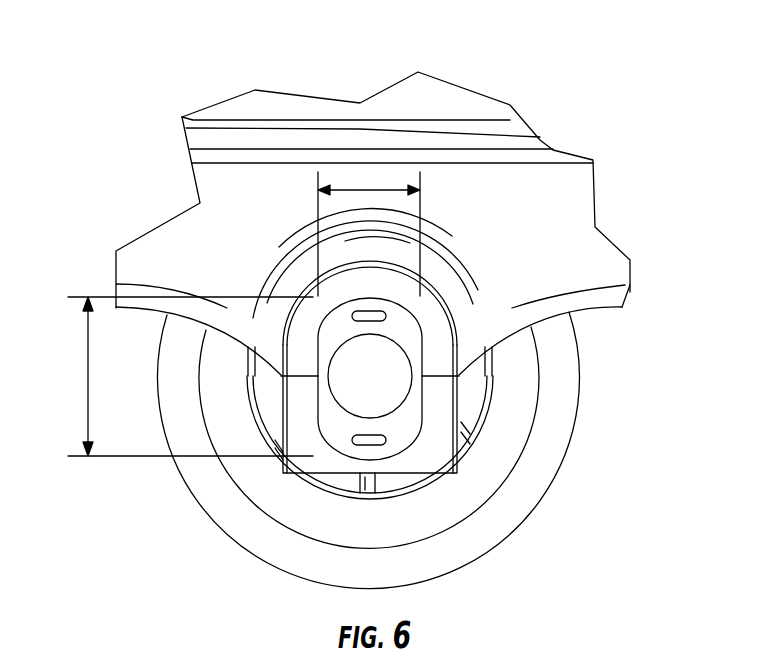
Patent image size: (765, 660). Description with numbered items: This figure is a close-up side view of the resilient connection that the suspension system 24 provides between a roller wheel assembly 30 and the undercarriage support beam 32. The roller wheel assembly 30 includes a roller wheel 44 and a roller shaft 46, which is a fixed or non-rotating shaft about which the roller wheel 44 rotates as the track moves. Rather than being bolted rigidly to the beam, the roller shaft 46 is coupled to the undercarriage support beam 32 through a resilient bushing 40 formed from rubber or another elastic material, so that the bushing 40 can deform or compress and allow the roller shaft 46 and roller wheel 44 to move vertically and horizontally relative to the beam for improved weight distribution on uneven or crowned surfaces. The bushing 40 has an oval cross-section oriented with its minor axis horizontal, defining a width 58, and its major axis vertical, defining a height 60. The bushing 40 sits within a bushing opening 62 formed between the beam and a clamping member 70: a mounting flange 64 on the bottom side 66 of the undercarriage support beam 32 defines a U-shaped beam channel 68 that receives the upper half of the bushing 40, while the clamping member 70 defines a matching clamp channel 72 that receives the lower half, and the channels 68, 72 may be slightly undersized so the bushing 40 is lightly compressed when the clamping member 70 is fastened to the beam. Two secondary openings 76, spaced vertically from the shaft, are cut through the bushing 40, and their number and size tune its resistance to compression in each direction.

The suspension system 24 is at (648, 91).
The roller wheel assembly 30 is at (489, 549).
The undercarriage support beam 32 is at (455, 109).
The resilient bushing 40 is at (342, 430).
The roller wheel 44 is at (532, 488).
The roller shaft 46 is at (358, 389).
The width 58 is at (357, 212).
The height 60 is at (87, 352).
The bushing opening 62 is at (423, 403).
The mounting flange 64 is at (477, 298).
The bottom side 66 is at (610, 312).
The beam recess or channel 68 is at (497, 316).
The clamping member 70 is at (295, 403).
The clamp recess or channel 72 is at (461, 448).
The secondary opening 76 is at (364, 310).